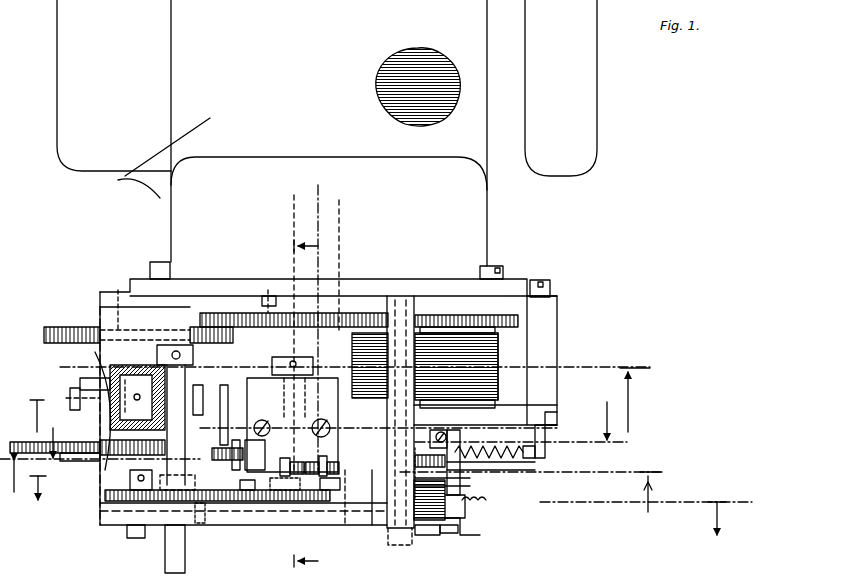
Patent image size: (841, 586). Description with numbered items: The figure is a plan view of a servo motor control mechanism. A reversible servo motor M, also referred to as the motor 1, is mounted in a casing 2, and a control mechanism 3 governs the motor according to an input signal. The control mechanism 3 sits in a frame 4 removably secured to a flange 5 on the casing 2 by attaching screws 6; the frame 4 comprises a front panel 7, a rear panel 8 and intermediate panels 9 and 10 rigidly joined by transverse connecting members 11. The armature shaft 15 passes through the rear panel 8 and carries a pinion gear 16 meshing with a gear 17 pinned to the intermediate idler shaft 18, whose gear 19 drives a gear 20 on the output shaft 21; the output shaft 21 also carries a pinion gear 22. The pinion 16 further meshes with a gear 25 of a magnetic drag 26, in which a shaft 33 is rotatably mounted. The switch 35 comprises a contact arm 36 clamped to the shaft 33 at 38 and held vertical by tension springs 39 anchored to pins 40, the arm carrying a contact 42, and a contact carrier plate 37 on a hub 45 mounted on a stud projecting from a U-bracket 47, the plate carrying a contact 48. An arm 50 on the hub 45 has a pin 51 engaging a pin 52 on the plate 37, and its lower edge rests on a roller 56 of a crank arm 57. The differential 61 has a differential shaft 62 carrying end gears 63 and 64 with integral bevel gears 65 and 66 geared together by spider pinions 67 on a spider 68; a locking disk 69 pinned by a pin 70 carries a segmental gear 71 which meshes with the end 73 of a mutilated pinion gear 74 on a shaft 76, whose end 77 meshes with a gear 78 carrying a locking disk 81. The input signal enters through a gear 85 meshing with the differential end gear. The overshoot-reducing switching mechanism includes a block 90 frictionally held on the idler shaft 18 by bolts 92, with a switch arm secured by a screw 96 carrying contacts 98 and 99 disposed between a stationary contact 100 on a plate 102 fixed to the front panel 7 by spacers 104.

The motor 1 is at (426, 66).
The casing 2 is at (154, 158).
The control mechanism 3 is at (90, 362).
The frame 4 is at (390, 298).
The flange 5 is at (225, 290).
The attaching screws 6 is at (150, 266).
The front panel 7 is at (80, 538).
The rear panel 8 is at (200, 262).
The intermediate panel 9 is at (365, 505).
The intermediate panel 10 is at (556, 418).
The connecting members 11 is at (100, 307).
The armature shaft 15 is at (306, 327).
The pinion gear 16 is at (350, 314).
The gear 17 is at (226, 314).
The intermediate idler shaft 18 is at (268, 292).
The gear 19 is at (282, 505).
The gear 20 is at (95, 502).
The output shaft 21 is at (165, 564).
The pinion gear 22 is at (195, 352).
The gear 25 is at (512, 320).
The magnetic drag 26 is at (557, 357).
The shaft 33 is at (447, 534).
The switch 35 is at (548, 440).
The contact arm 36 is at (478, 452).
The contact carrier plate 37 is at (466, 492).
The clamp 38 is at (420, 432).
The tension springs 39 is at (548, 472).
The pins 40 is at (548, 452).
The contact 42 is at (418, 462).
The hub 45 is at (430, 526).
The U-bracket 47 is at (500, 408).
The contact 48 is at (472, 468).
The arm 50 is at (462, 520).
The pin 51 is at (462, 512).
The pin 52 is at (468, 504).
The roller 56 is at (390, 540).
The crank arm 57 is at (372, 528).
The differential 61 is at (76, 402).
The differential shaft 62 is at (122, 292).
The end gear 63 is at (46, 328).
The end gear 64 is at (90, 458).
The end bevel gear 65 is at (120, 378).
The end bevel gear 66 is at (115, 425).
The spider pinions 67 is at (82, 382).
The spider 68 is at (108, 390).
The locking disk 69 is at (72, 462).
The pin 70 is at (132, 500).
The segmental gear 71 is at (155, 500).
The rear end of pinion 73 is at (178, 500).
The mutilated pinion gear 74 is at (205, 440).
The shaft 76 is at (200, 512).
The rear end of pinion 77 is at (218, 455).
The gear 78 is at (244, 452).
The locking disk 81 is at (250, 425).
The gear 85 is at (26, 416).
The block 90 is at (318, 372).
The bolts 92 is at (262, 422).
The screw 96 is at (300, 420).
The contact 98 is at (312, 468).
The contact 99 is at (286, 466).
The contact 100 is at (338, 462).
The stationary plate 102 is at (250, 515).
The spacers 104 is at (330, 510).
The reversible servo motor M is at (328, 41).